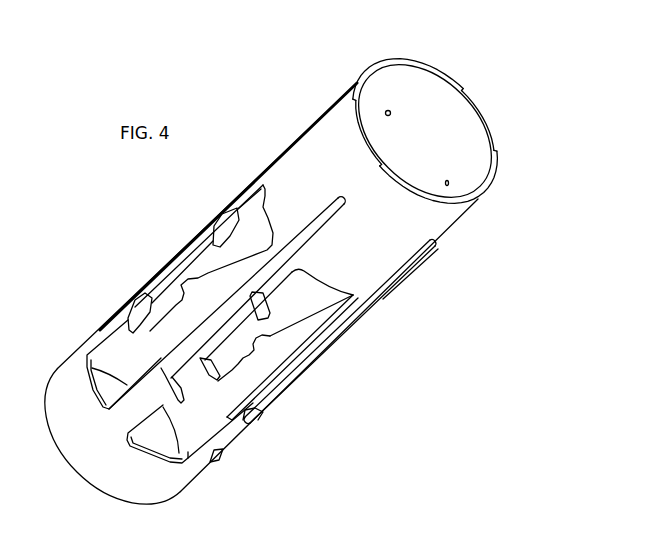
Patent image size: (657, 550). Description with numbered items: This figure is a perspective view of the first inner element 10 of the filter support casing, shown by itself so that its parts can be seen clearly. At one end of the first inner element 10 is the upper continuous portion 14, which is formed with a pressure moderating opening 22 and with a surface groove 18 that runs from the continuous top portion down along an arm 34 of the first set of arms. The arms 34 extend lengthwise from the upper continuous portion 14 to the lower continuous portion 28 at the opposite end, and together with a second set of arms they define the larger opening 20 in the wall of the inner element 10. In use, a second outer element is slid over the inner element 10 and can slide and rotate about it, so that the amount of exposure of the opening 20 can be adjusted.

The first inner element 10 is at (470, 216).
The continuous top portion 14 is at (435, 244).
The surface groove 18 is at (313, 242).
The opening 20 is at (238, 359).
The pressure moderating opening 22 is at (399, 107).
The lower continuous portion 28 is at (190, 492).
The first set of arms 34 is at (269, 304).